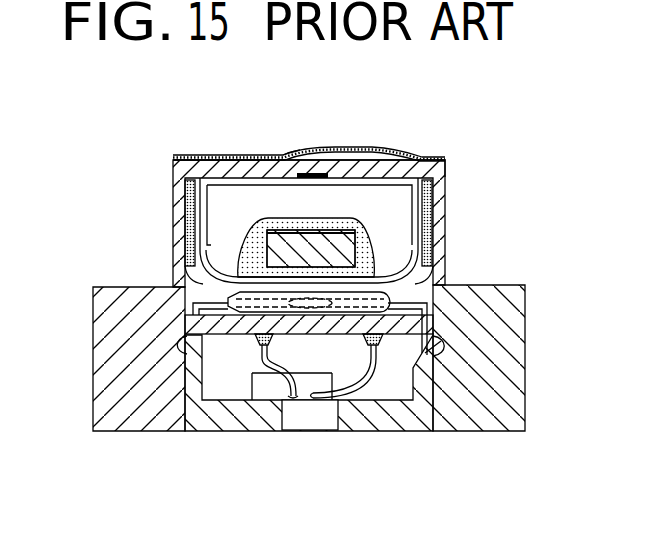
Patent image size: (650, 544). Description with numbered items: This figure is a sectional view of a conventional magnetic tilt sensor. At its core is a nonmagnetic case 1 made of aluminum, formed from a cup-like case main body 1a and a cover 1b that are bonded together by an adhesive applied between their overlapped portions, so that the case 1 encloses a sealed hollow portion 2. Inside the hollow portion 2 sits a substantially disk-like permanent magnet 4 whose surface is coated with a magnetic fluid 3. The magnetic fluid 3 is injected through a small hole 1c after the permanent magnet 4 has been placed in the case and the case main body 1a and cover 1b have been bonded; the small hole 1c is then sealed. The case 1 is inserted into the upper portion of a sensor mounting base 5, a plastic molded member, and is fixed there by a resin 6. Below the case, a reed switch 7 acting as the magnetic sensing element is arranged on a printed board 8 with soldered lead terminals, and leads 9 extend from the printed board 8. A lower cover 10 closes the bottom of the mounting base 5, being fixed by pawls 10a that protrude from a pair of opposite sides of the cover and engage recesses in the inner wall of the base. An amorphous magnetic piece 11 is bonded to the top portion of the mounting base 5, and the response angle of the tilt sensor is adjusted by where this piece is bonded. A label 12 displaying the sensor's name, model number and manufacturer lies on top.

The nonmagnetic case 1 is at (436, 197).
The case main body 1a is at (415, 278).
The cover 1b is at (403, 177).
The small hole 1c is at (298, 153).
The hollow portion 2 is at (217, 202).
The magnetic fluid 3 is at (360, 230).
The permanent magnet 4 is at (304, 236).
The sensor mounting base 5 is at (105, 287).
The resin 6 is at (185, 246).
The reed switch 7 is at (372, 293).
The printed board 8 is at (393, 334).
The leads 9 is at (262, 352).
The lower cover 10 is at (372, 425).
The pawls 10a is at (180, 347).
The amorphous magnetic piece 11 is at (378, 154).
The label 12 is at (321, 148).